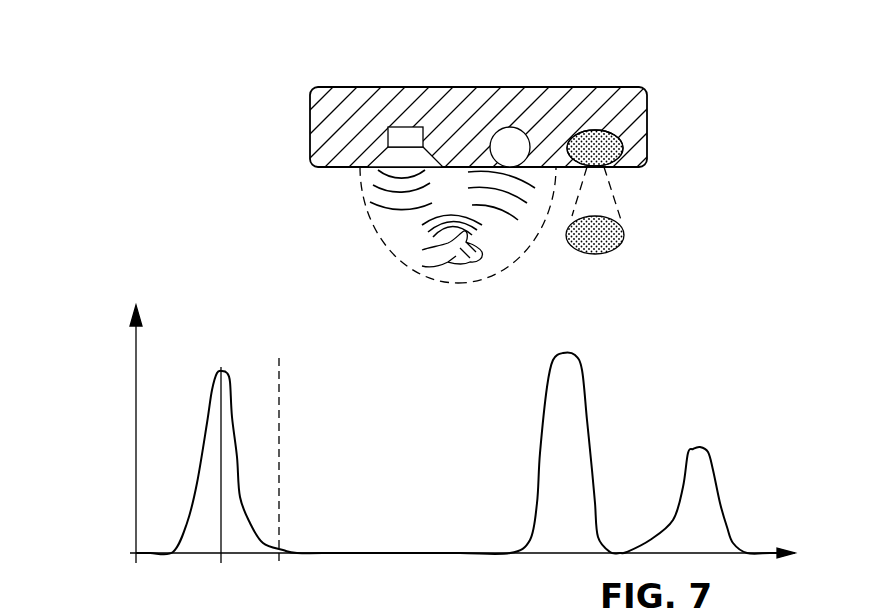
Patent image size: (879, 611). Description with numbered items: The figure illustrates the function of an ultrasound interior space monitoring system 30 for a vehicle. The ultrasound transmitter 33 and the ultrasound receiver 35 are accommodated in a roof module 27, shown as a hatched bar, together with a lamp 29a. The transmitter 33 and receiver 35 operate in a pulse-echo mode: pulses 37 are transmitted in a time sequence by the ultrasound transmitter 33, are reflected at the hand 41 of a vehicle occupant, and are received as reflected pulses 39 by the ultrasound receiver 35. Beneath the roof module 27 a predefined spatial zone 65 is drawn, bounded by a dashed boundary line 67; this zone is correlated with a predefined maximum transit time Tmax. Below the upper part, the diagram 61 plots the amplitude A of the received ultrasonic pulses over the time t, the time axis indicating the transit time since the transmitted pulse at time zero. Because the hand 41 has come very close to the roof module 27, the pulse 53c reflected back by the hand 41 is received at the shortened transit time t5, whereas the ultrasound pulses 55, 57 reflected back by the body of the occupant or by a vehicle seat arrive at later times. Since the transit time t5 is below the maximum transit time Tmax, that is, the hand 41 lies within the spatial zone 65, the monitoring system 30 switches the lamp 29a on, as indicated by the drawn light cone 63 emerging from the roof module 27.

The ultrasound interior space monitoring system 30 is at (315, 79).
The roof module 27 is at (646, 112).
The ultrasound transmitter 33 is at (403, 126).
The ultrasound receiver 35 is at (510, 127).
The lamp 29a is at (595, 130).
The light cone 63 is at (632, 202).
The pulses 37 is at (358, 200).
The boundary line 67 is at (514, 264).
The spatial zone 65 is at (433, 206).
The reflected pulses 39 is at (418, 240).
The hand 41 is at (463, 262).
The diagram 61 is at (112, 330).
The pulse reflected back by the hand 53c is at (233, 416).
The ultrasound pulse 55 is at (578, 361).
The ultrasound pulse 57 is at (712, 458).